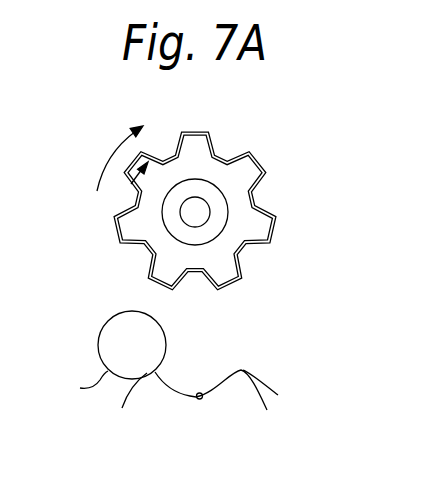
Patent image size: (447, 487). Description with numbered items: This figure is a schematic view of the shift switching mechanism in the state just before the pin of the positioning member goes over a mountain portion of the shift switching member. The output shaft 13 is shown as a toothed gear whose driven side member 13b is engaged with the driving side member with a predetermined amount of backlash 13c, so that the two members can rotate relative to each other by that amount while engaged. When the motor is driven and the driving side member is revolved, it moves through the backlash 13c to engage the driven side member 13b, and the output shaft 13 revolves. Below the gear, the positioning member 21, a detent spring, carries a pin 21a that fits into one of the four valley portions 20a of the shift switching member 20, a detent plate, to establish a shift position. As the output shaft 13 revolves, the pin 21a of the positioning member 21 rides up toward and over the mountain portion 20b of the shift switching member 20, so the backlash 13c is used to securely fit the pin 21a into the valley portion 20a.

The output shaft 13 is at (216, 201).
The driven side member 13b is at (261, 175).
The backlash 13c is at (263, 175).
The positioning member 21 is at (103, 322).
The pin 21a is at (74, 383).
The shift switching member 20 is at (225, 389).
The valley portion 20a is at (201, 399).
The mountain portion 20b is at (280, 391).